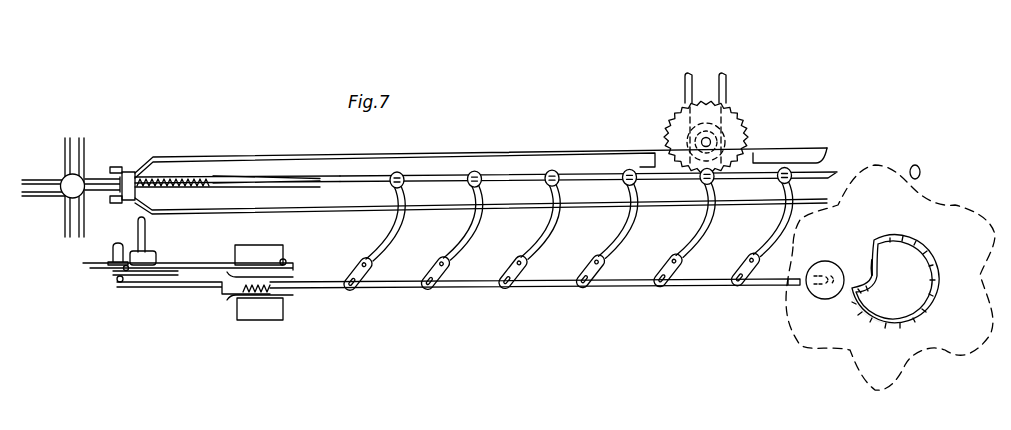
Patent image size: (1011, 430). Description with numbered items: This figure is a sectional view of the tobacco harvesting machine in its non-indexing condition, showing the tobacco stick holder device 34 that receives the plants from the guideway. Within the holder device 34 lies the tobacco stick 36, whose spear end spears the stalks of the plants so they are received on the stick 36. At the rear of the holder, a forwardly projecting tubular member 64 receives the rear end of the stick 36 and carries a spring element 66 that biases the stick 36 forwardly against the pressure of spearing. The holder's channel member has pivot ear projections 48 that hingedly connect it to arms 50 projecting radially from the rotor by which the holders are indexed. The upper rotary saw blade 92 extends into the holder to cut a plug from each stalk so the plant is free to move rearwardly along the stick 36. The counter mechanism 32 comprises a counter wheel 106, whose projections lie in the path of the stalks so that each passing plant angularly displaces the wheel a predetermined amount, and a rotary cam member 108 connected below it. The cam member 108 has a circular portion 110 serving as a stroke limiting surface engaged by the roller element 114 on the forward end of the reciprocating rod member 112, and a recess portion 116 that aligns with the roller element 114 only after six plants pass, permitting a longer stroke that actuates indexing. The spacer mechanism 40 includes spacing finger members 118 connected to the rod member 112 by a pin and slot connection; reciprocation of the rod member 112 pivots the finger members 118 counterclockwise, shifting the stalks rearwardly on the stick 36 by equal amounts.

The counter mechanism 32 is at (955, 222).
The tobacco stick holder device 34 is at (478, 148).
The tobacco stick 36 is at (583, 173).
The spacer mechanism 40 is at (567, 253).
The pivot ear projections 48 is at (131, 174).
The arms 50 is at (102, 178).
The tubular member 64 is at (254, 176).
The spring element 66 is at (179, 179).
The upper rotary saw blade 92 is at (737, 133).
The counter wheel 106 is at (957, 330).
The rotary cam member 108 is at (870, 324).
The circular portion 110 is at (882, 295).
The reciprocating rod member 112 is at (627, 288).
The roller element 114 is at (820, 293).
The recess portion 116 is at (866, 265).
The spacing finger members 118 is at (694, 236).